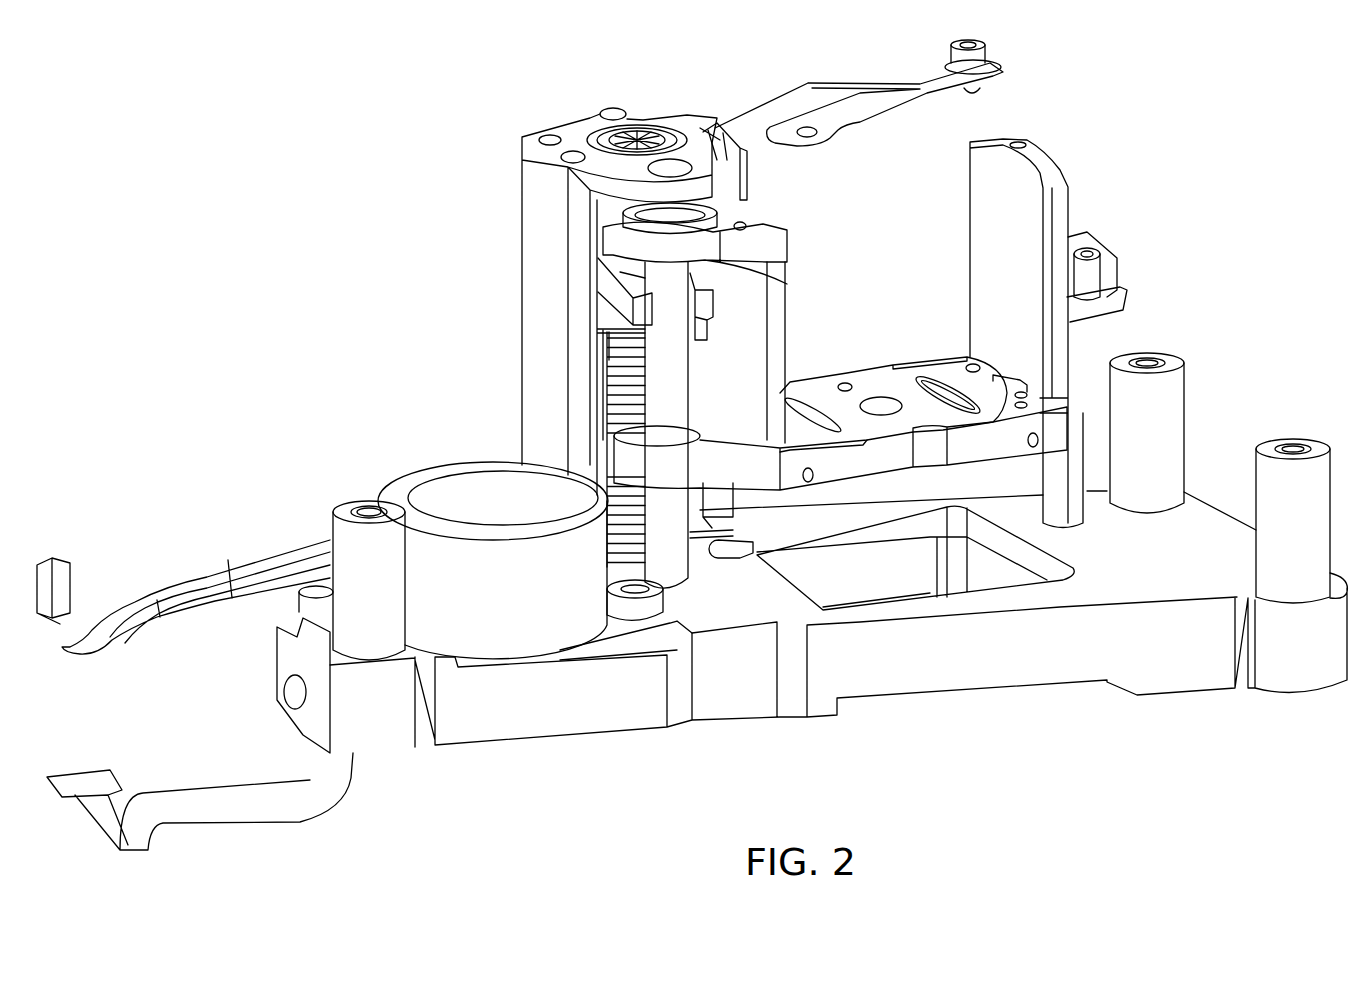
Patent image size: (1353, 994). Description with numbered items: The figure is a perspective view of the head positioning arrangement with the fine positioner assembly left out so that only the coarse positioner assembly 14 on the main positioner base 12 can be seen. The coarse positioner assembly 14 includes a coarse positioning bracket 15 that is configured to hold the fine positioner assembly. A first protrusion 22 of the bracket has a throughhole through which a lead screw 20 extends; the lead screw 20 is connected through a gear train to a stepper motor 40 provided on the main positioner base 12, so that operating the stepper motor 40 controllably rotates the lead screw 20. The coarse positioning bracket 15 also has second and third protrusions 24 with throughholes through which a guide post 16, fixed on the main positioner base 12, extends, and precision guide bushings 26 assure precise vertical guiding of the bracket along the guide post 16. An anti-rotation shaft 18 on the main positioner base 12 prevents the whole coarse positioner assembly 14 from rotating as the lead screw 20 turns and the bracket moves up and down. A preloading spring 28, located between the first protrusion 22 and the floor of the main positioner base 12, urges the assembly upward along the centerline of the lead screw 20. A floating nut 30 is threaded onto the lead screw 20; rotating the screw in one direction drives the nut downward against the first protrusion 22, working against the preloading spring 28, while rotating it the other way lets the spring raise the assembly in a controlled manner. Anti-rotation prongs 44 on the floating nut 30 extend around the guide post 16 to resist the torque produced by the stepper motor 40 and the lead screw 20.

The main positioner base 12 is at (470, 723).
The coarse positioner assembly 14 is at (838, 207).
The coarse positioning bracket 15 is at (787, 325).
The guide post 16 is at (677, 575).
The anti-rotation shaft 18 is at (1087, 350).
The lead screw 20 is at (603, 377).
The first protrusion 22 is at (607, 318).
The second and third protrusions 24 is at (787, 280).
The precision guide bushings 26 is at (713, 210).
The preloading spring 28 is at (603, 362).
The floating nut 30 is at (610, 263).
The stepper motor 40 is at (417, 485).
The anti-rotation prongs 44 is at (615, 298).